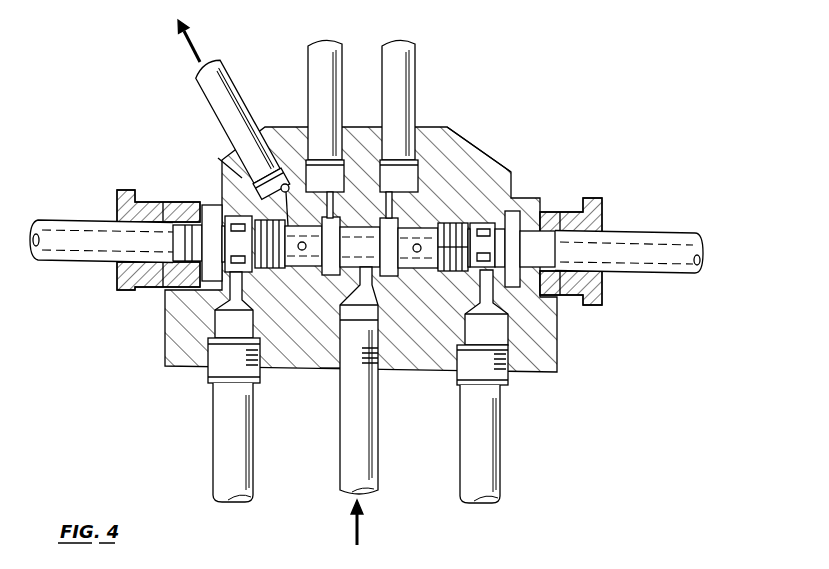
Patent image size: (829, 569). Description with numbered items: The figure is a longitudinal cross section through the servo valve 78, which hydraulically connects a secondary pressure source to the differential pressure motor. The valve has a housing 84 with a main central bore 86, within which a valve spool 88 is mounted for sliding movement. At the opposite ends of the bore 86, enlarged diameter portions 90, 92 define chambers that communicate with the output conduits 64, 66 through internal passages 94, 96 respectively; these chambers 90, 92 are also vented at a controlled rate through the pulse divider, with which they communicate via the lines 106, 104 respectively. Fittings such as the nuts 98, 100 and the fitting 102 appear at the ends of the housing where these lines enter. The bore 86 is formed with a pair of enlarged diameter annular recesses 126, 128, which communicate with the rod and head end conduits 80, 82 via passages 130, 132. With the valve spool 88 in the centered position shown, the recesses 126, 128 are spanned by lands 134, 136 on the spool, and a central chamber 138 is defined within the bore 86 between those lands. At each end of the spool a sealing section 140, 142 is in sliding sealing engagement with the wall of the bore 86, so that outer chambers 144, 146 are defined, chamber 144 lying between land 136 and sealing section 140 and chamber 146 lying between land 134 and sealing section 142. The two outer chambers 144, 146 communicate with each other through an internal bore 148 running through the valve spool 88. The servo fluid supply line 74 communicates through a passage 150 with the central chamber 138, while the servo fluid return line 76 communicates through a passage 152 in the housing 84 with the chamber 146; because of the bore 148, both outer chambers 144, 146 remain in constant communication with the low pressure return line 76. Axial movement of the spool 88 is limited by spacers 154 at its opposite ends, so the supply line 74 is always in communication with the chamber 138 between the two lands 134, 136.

The output conduit 64 is at (488, 475).
The output conduit 66 is at (246, 474).
The servo fluid supply line 74 is at (378, 476).
The servo fluid return line 76 is at (200, 93).
The servo valve 78 is at (479, 132).
The rod end conduit 80 is at (308, 56).
The head end conduit 82 is at (416, 58).
The housing 84 is at (165, 348).
The main central bore 86 is at (412, 227).
The valve spool 88 is at (418, 270).
The enlarged diameter portion 90 is at (484, 224).
The enlarged diameter portion 92 is at (214, 214).
The internal passage 94 is at (488, 289).
The internal passage 96 is at (238, 291).
The nut 98 is at (180, 204).
The nut 100 is at (190, 204).
The fitting 102 is at (147, 290).
The line 104 is at (652, 237).
The line 106 is at (52, 258).
The enlarged diameter annular recess 126 is at (335, 368).
The enlarged diameter annular recess 128 is at (389, 277).
The passage 130 is at (338, 197).
The passage 132 is at (390, 197).
The land 134 is at (343, 216).
The land 136 is at (345, 224).
The central chamber 138 is at (378, 328).
The sealing section 140 is at (447, 272).
The sealing section 142 is at (290, 270).
The outer chamber 144 is at (449, 225).
The outer chamber 146 is at (313, 268).
The internal bore 148 is at (356, 268).
The passage 150 is at (376, 332).
The passage 152 is at (288, 180).
The spacers 154 is at (540, 205).